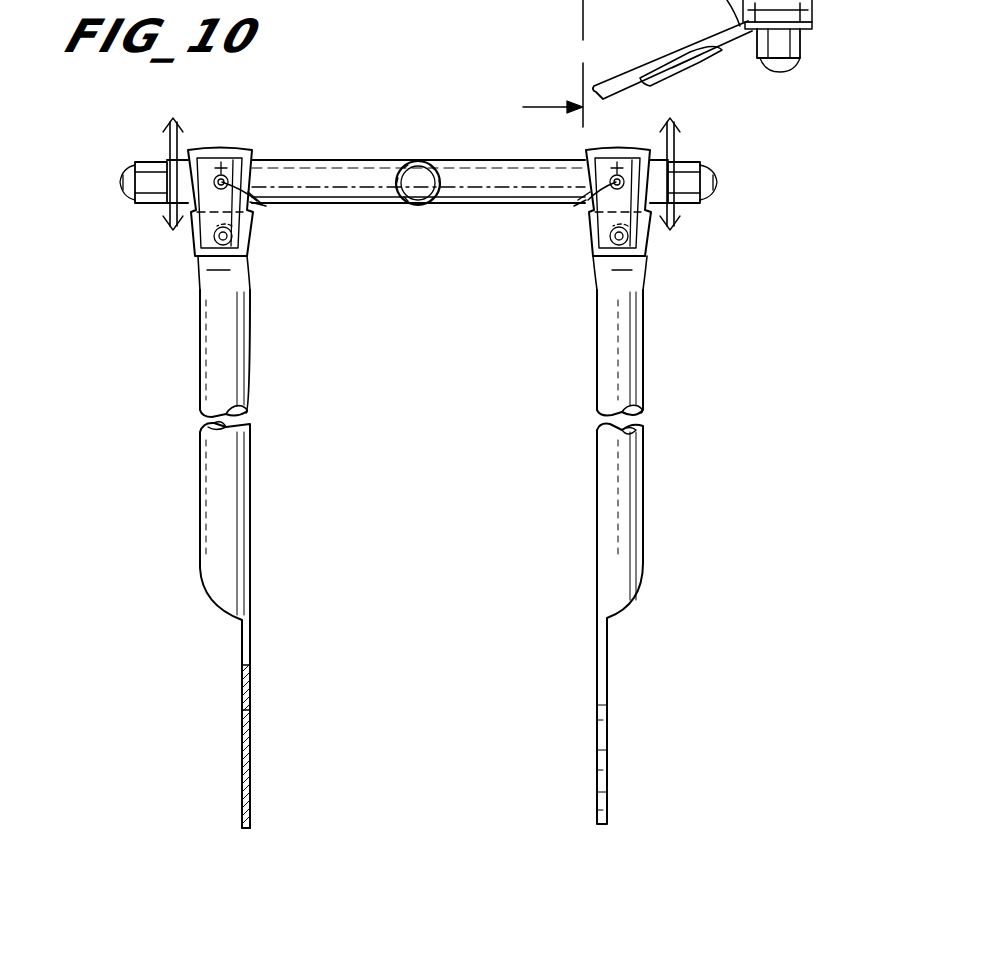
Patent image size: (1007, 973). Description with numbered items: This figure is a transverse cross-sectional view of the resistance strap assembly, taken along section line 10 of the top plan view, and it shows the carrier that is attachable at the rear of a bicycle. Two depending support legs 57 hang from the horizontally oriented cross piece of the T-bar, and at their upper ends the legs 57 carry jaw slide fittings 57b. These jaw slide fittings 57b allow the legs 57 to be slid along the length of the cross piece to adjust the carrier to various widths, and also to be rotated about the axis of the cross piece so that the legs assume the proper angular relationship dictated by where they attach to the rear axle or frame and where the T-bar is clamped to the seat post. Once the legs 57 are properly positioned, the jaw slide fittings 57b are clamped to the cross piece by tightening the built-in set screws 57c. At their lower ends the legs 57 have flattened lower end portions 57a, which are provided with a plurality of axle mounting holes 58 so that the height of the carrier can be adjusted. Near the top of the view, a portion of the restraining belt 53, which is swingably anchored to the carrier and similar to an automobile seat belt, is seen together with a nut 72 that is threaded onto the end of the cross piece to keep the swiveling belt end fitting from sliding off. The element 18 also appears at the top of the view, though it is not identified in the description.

The section view direction indicator 10 is at (536, 63).
The lever 53 is at (644, 72).
The tubular support post 57 is at (235, 368).
The lower post section 57a is at (605, 662).
The mounting bracket 57b is at (230, 145).
The fastener 57c is at (265, 214).
The knurled/serrated portion 58 is at (245, 800).
The nut 72 is at (800, 45).
The frame member 18 is at (733, 13).